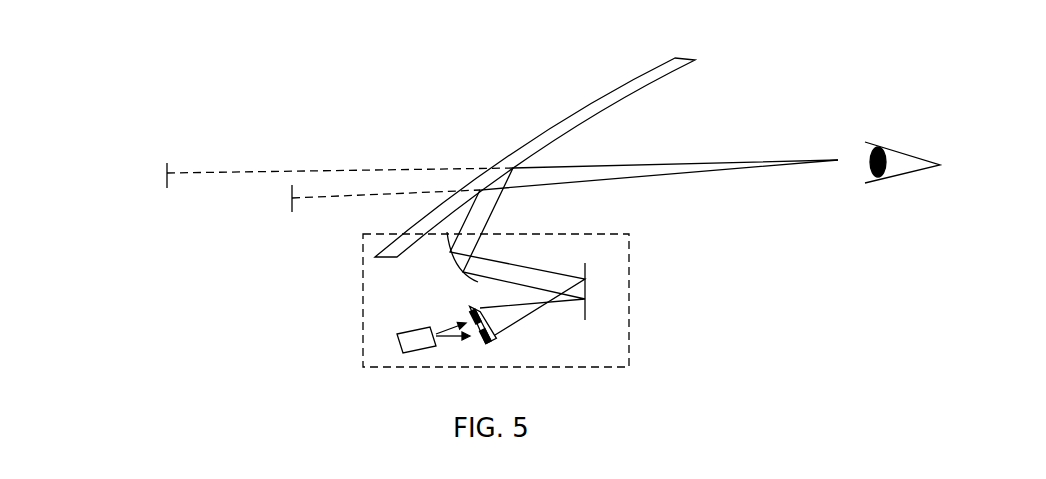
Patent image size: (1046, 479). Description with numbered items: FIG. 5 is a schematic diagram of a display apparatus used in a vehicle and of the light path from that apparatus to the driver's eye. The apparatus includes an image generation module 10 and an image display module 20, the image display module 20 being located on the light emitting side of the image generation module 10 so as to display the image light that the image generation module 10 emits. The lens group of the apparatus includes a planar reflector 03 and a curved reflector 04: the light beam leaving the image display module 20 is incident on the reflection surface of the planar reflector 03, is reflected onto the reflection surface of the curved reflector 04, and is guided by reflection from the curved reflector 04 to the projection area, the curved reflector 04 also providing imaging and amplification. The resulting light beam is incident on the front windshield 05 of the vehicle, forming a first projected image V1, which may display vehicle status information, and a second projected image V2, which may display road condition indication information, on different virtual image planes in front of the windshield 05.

The windshield 05 is at (608, 93).
The first projected image V1 is at (167, 175).
The second projected image V2 is at (292, 198).
The curved reflector 04 is at (452, 262).
The planar reflector 03 is at (585, 285).
The image generation module 10 is at (397, 335).
The image display module 20 is at (493, 338).